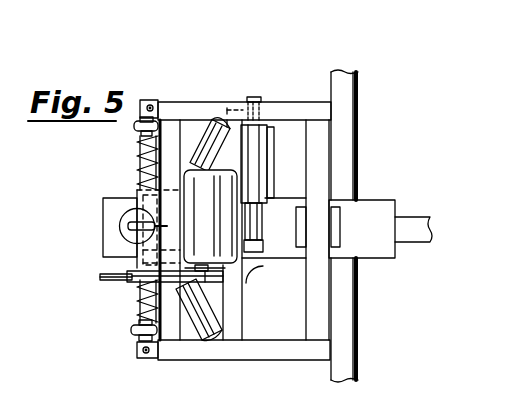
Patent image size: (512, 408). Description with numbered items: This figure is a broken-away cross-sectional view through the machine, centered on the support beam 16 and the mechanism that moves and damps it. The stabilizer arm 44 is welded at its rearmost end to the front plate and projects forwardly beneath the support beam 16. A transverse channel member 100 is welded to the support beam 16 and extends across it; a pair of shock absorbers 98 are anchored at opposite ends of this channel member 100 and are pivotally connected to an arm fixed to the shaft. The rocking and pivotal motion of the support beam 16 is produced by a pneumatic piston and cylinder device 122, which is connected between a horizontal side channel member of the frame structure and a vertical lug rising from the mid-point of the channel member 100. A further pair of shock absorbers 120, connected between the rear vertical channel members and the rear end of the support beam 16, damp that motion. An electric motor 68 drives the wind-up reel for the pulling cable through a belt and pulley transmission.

The support beam 16 is at (373, 251).
The stabilizer arm 44 is at (417, 228).
The electric motor 68 is at (226, 194).
The shock absorbers 98 is at (206, 120).
The channel member 100 is at (240, 303).
The shock absorbers 120 is at (137, 172).
The pneumatic piston and cylinder device 122 is at (270, 128).